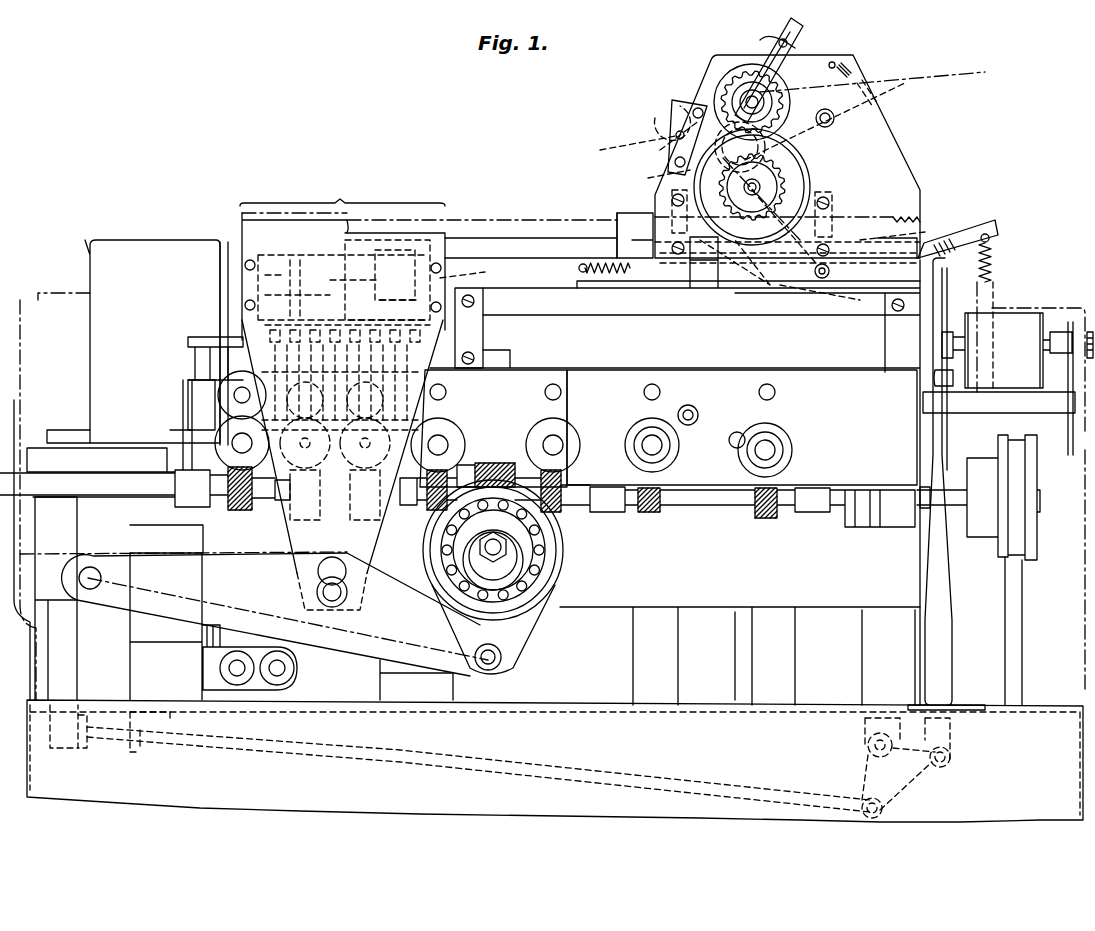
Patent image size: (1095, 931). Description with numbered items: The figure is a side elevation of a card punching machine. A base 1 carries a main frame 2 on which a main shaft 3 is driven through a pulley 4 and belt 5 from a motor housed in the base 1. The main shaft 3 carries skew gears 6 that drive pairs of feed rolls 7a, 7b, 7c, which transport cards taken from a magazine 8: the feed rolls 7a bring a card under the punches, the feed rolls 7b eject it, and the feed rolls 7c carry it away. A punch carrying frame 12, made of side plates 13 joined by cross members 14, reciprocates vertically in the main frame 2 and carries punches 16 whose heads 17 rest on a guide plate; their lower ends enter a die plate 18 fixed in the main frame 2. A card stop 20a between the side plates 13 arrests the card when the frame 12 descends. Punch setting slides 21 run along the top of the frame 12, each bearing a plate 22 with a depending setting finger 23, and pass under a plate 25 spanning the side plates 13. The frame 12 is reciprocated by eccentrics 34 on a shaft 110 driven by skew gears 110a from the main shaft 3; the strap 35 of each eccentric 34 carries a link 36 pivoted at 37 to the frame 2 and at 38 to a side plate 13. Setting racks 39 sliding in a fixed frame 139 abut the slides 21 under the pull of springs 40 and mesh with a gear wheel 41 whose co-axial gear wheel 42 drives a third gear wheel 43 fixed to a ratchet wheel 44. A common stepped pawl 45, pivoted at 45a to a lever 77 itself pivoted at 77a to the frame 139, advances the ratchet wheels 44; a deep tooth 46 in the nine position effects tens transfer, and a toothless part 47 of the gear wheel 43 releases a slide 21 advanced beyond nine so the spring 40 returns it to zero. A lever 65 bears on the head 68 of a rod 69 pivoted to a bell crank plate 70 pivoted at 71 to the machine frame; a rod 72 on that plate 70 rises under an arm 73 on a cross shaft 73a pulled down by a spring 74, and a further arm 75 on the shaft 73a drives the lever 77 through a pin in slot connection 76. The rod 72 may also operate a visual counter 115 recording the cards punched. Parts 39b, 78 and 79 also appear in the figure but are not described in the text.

The base 1 is at (1047, 775).
The main frame 2 is at (890, 600).
The main shaft 3 is at (715, 487).
The pulley 4 is at (1032, 478).
The belt 5 is at (1015, 585).
The skew gears 6 is at (240, 512).
The feed rolls 7a is at (200, 408).
The feed rolls 7b is at (440, 440).
The feed rolls 7c is at (555, 440).
The magazine 8 is at (152, 341).
The punch carrying frame 12 is at (342, 182).
The side plates 13 is at (360, 530).
The cross members 14 is at (250, 285).
The punches 16 is at (195, 352).
The heads 17 is at (430, 328).
The die plate 18 is at (190, 385).
The card stop 20a is at (445, 395).
The punch setting slides 21 is at (477, 238).
The plate 22 is at (400, 240).
The setting finger 23 is at (479, 273).
The plate 25 is at (242, 222).
The eccentrics 34 is at (518, 592).
The strap 35 is at (505, 664).
The link 36 is at (370, 620).
The pivot 37 is at (79, 580).
The pivot 38 is at (317, 592).
The setting racks 39 is at (625, 225).
The rack 39b is at (892, 214).
The springs 40 is at (620, 275).
The gear wheel 41 is at (773, 190).
The co-axial gear wheel 42 is at (790, 175).
The third gear wheel 43 is at (790, 110).
The ratchet wheel 44 is at (715, 135).
The stepped pawl 45 is at (762, 50).
The pivot 45a is at (795, 45).
The deep tooth 46 is at (725, 85).
The toothless part 47 is at (872, 79).
The lever 65 is at (65, 728).
The head 68 is at (87, 748).
The rod 69 is at (540, 765).
The bell crank plate 70 is at (905, 785).
The pivot 71 is at (868, 745).
The rod 72 is at (947, 288).
The arm 73 is at (965, 235).
The cross shaft 73a is at (822, 280).
The spring 74 is at (993, 262).
The further arm 75 is at (790, 270).
The pin in slot connection 76 is at (655, 181).
The lever 77 is at (760, 55).
The pivot 77a is at (841, 83).
The link 78 is at (621, 152).
The cam 79 is at (662, 110).
The shaft 110 is at (500, 550).
The skew gears 110a is at (485, 468).
The counter 115 is at (1007, 345).
The fixed frame 139 is at (905, 180).